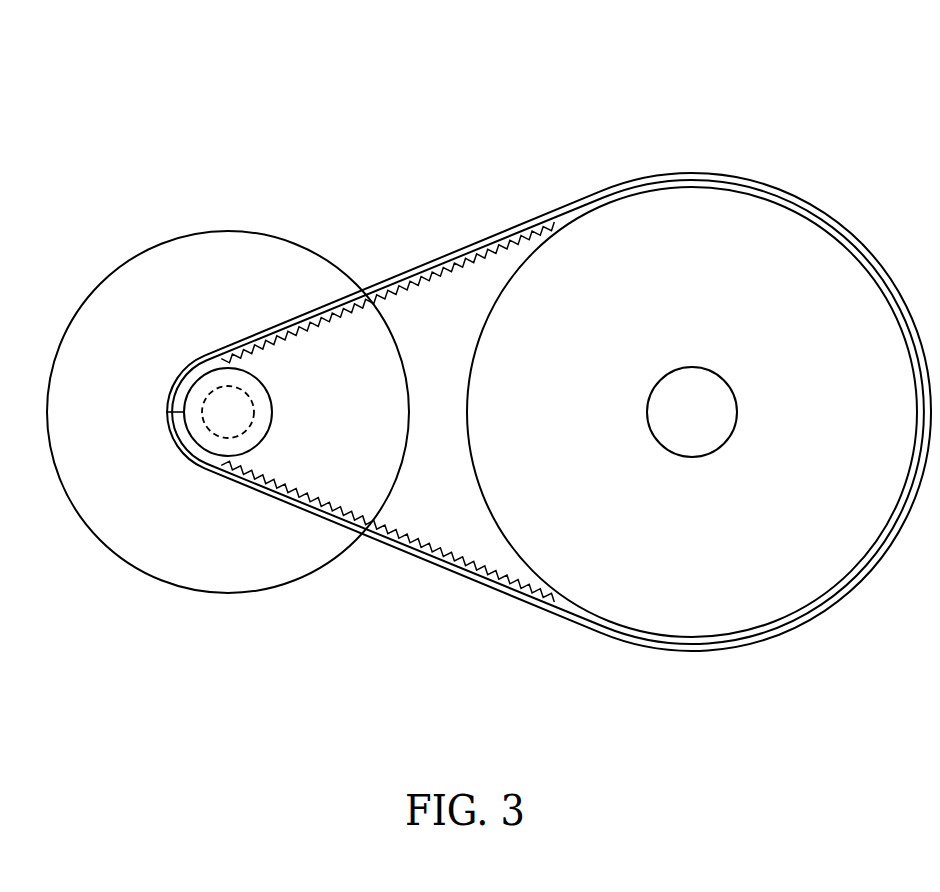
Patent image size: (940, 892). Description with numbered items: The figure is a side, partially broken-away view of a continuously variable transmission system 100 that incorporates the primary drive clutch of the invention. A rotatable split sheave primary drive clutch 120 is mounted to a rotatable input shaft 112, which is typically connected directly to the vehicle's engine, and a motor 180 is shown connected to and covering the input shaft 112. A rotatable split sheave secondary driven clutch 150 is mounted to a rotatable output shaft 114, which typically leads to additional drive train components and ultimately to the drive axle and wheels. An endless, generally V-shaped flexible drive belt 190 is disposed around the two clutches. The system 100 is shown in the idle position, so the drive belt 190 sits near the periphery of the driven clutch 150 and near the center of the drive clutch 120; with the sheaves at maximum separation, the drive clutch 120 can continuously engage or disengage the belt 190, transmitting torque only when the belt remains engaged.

The continuously variable transmission system 100 is at (160, 80).
The input shaft 112 is at (237, 417).
The output shaft 114 is at (715, 418).
The drive clutch 120 is at (102, 280).
The driven clutch 150 is at (846, 192).
The motor 180 is at (267, 435).
The drive belt 190 is at (430, 272).